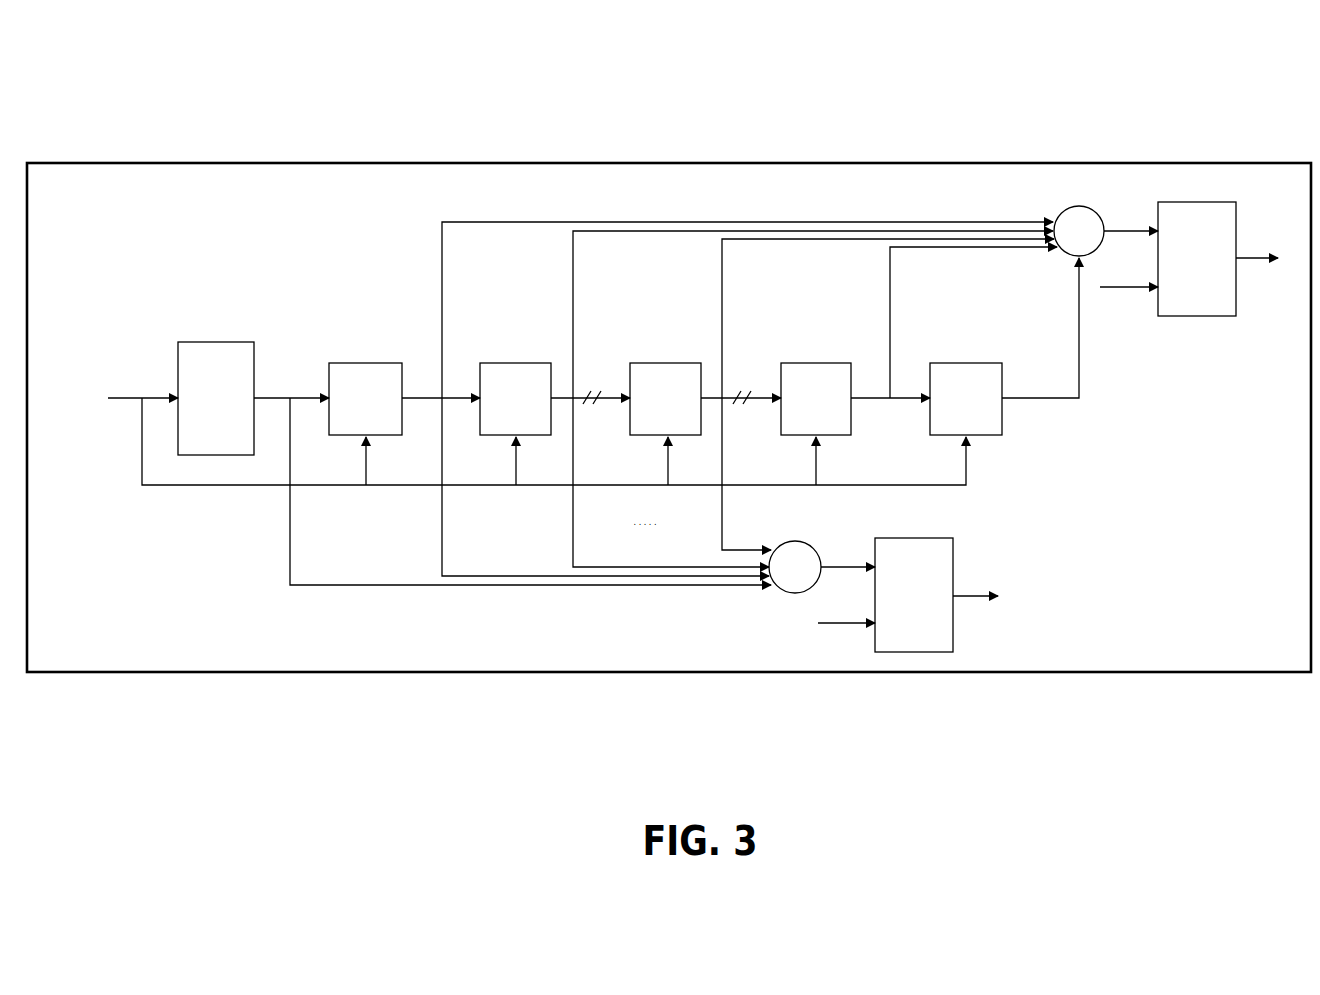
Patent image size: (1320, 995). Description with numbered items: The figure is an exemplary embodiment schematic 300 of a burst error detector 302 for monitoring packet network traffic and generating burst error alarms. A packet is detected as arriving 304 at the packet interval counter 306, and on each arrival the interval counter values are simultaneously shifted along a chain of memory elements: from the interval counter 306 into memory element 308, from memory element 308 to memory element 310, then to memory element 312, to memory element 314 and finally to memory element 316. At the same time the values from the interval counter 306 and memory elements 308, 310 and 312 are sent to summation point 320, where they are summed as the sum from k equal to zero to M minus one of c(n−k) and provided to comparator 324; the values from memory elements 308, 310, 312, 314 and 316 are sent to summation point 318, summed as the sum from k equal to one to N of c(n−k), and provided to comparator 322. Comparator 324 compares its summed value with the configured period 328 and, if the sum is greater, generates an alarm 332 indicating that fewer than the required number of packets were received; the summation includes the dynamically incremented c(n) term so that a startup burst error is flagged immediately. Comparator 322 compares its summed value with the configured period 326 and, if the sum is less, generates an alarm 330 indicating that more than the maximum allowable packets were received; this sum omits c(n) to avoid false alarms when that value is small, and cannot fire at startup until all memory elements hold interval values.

The exemplary embodiment schematic 300 is at (1238, 66).
The burst error detector 302 is at (892, 163).
The packet arriving 304 is at (88, 383).
The packet interval counter 306 is at (220, 342).
The memory element 308 is at (345, 363).
The memory element 310 is at (493, 363).
The memory element 312 is at (643, 363).
The memory element 314 is at (793, 363).
The memory element 316 is at (943, 363).
The summation point 318 is at (1099, 212).
The summation point 320 is at (808, 545).
The comparator 322 is at (1213, 202).
The comparator 324 is at (950, 538).
The configured period 326 is at (1102, 288).
The configured period 328 is at (832, 625).
The alarm 330 is at (1262, 260).
The alarm 332 is at (985, 598).